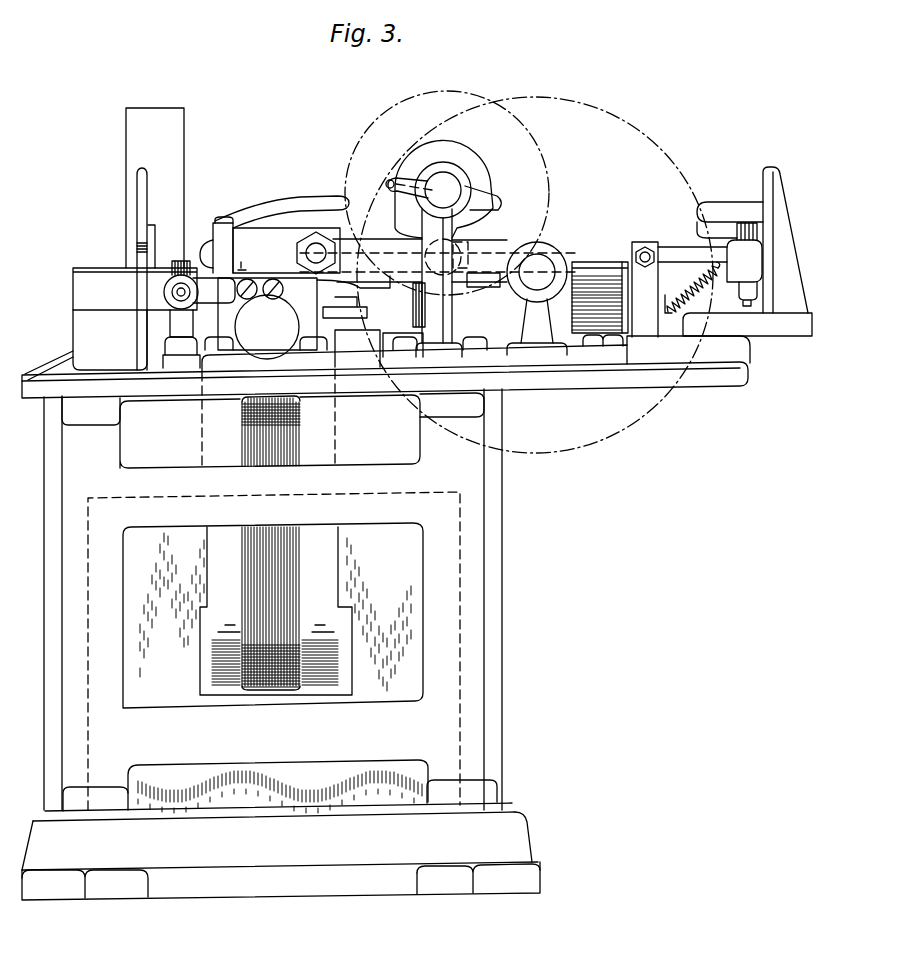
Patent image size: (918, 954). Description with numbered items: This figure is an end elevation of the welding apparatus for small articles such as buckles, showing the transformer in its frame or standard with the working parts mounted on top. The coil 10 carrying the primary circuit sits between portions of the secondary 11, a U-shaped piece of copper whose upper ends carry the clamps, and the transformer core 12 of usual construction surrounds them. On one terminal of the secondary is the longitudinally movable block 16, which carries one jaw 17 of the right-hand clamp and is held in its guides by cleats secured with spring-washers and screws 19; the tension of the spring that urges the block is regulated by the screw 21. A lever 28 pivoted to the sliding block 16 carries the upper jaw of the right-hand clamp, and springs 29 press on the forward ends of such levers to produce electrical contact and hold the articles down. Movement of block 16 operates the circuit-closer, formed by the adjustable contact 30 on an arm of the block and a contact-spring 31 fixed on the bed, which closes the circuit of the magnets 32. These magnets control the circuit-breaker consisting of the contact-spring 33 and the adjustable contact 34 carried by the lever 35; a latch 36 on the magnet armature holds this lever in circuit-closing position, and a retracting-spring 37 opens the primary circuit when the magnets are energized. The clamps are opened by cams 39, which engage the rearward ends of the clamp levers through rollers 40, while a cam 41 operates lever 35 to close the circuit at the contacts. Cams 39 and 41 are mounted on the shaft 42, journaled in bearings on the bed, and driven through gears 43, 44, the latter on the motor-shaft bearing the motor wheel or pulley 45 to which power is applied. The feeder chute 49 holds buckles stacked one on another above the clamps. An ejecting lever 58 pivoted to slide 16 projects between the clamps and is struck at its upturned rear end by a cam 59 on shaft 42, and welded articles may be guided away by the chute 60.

The coil 10 is at (255, 435).
The secondary 11 is at (323, 437).
The core 12 is at (395, 688).
The block 16 is at (304, 313).
The jaw 17 is at (209, 248).
The spring-washers and screws 19 is at (374, 325).
The screw 21 is at (267, 327).
The lever 28 is at (218, 222).
The springs 29 is at (300, 205).
The adjustable contact 30 is at (164, 292).
The contact-spring 31 is at (152, 326).
The magnets 32 is at (625, 268).
The contact-spring 33 is at (720, 204).
The adjustable contact 34 is at (737, 233).
The lever 35 is at (590, 260).
The latch 36 is at (508, 272).
The retracting-spring 37 is at (698, 303).
The cams 39 is at (478, 165).
The rollers 40 is at (468, 250).
The cam 41 is at (488, 203).
The shaft 42 is at (443, 259).
The gear 43 is at (447, 178).
The gear 44 is at (553, 258).
The motor wheel or pulley 45 is at (626, 424).
The chute 49 is at (126, 140).
The lever 58 is at (243, 270).
The cam 59 is at (387, 184).
The chute 60 is at (43, 368).